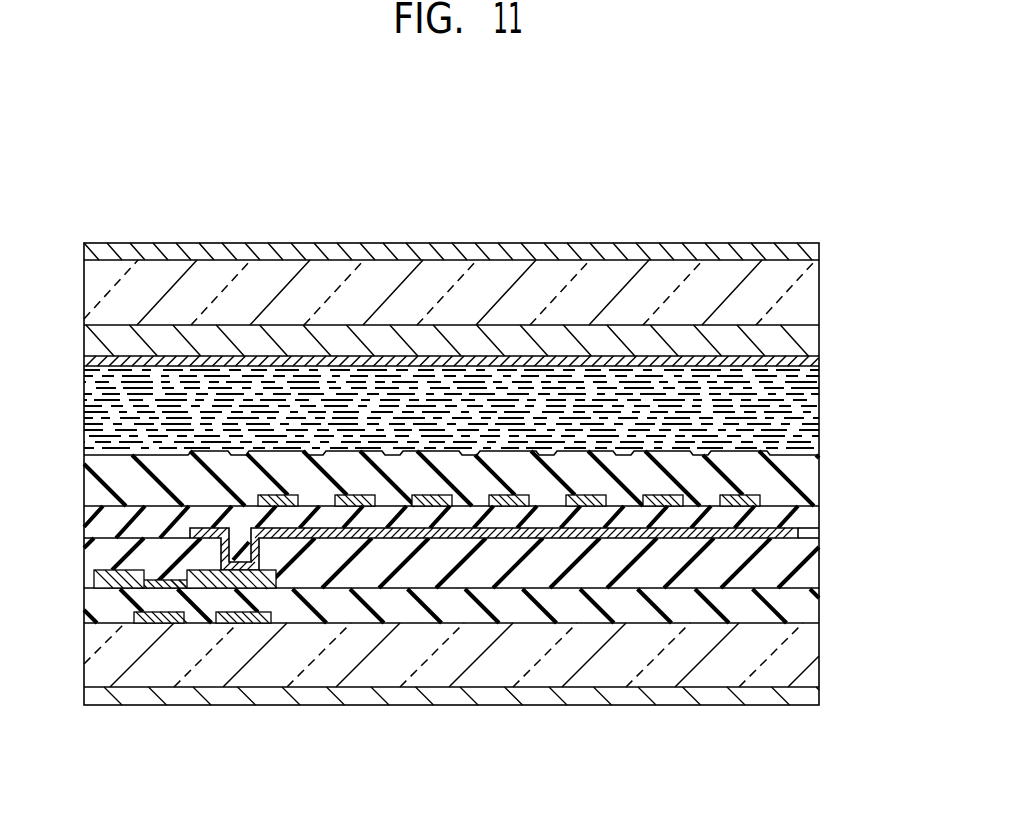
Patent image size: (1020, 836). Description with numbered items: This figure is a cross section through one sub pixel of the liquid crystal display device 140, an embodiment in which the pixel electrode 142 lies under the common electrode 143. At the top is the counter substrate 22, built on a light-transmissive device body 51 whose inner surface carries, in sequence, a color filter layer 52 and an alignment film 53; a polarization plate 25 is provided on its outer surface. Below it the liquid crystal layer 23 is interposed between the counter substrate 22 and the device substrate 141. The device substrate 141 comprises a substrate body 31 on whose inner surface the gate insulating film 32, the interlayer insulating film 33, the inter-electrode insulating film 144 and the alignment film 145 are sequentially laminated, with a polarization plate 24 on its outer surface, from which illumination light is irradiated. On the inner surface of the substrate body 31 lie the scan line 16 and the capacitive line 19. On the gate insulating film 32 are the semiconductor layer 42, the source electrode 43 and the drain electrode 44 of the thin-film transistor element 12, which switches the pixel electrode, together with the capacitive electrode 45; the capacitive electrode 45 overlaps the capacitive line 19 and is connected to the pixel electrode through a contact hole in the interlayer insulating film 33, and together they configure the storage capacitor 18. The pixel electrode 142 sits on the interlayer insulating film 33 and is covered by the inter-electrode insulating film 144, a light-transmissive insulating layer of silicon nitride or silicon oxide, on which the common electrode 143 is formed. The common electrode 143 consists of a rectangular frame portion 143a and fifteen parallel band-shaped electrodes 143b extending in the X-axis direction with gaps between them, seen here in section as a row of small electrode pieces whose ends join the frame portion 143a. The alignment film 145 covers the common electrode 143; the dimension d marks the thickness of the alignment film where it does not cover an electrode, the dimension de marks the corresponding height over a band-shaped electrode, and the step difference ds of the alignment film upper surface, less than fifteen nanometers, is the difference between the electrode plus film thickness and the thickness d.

The liquid crystal display device 140 is at (742, 190).
The counter substrate 22 is at (464, 316).
The liquid crystal layer 23 is at (73, 449).
The device substrate 141 is at (463, 481).
The polarization plate 25 is at (820, 250).
The device body 51 is at (820, 298).
The color filter layer 52 is at (820, 337).
The alignment film 53 is at (820, 361).
The alignment film 145 is at (820, 496).
The common electrode 143 is at (509, 328).
The frame portion 143a is at (280, 495).
The band-shaped electrodes 143b is at (506, 495).
The inter-electrode insulating film 144 is at (820, 527).
The pixel electrode 142 is at (447, 540).
The interlayer insulating film 33 is at (820, 560).
The gate insulating film 32 is at (820, 605).
The substrate body 31 is at (820, 655).
The polarization plate 24 is at (820, 697).
The thin-film transistor element 12 is at (147, 688).
The source electrode 43 is at (117, 589).
The semiconductor layer 42 is at (146, 589).
The drain electrode 44 is at (176, 589).
The capacitive electrode 45 is at (260, 589).
The scan line 16 is at (238, 589).
The capacitive line 19 is at (272, 624).
The storage capacitor 18 is at (292, 594).
The thickness of the alignment film d is at (548, 452).
The electrode edge dimension de is at (665, 452).
The step difference ds is at (820, 452).